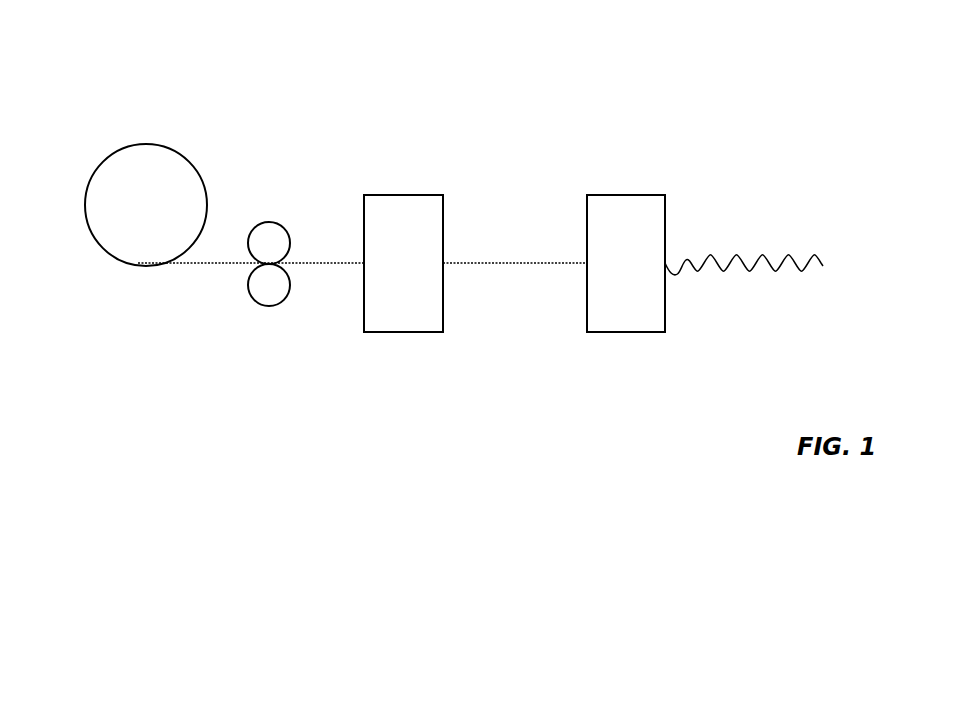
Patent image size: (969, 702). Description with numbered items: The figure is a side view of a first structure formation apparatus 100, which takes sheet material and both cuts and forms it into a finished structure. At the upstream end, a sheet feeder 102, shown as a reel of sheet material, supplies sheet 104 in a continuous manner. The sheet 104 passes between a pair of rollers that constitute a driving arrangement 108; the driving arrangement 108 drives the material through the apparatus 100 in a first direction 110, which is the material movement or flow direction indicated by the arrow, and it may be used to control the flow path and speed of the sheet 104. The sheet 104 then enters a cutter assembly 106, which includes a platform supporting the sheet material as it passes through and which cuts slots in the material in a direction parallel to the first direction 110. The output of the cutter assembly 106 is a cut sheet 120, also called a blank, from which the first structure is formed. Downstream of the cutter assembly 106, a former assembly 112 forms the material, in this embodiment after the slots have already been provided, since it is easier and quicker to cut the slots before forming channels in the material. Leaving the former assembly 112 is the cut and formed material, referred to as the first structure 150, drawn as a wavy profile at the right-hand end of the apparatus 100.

The first structure formation apparatus 100 is at (668, 121).
The sheet feeder 102 is at (102, 160).
The sheet 104 is at (202, 264).
The cutter assembly 106 is at (400, 333).
The driving arrangements 108 is at (267, 222).
The first direction 110 is at (492, 168).
The former assembly 112 is at (623, 333).
The cut sheet 120 is at (515, 285).
The first structure 150 is at (799, 209).